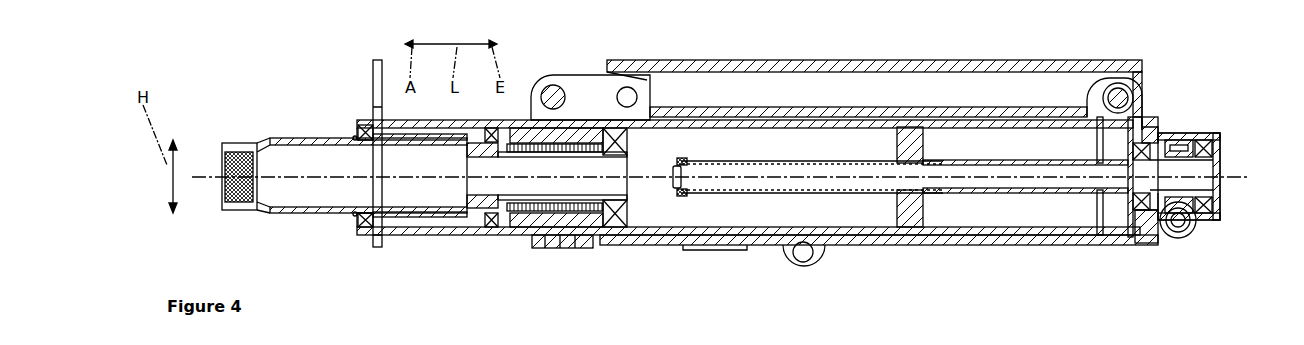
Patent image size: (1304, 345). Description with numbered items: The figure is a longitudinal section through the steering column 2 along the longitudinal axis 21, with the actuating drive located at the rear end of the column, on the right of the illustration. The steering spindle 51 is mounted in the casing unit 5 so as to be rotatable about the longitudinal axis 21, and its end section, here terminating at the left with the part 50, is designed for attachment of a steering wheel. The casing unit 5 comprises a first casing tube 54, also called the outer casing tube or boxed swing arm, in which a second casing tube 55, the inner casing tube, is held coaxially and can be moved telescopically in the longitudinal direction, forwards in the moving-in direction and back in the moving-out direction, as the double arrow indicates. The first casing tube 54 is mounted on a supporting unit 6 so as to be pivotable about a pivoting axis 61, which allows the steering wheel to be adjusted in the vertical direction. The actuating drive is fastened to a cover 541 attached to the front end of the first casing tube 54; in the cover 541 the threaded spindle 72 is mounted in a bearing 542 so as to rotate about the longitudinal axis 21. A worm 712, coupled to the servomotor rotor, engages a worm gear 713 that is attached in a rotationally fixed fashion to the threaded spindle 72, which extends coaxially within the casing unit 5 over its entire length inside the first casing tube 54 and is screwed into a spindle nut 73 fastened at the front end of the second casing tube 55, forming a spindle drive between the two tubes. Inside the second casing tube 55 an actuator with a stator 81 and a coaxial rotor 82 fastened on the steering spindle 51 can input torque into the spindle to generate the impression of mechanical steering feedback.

The steering column 2 is at (730, 154).
The casing unit 5 is at (977, 245).
The supporting unit 6 is at (810, 67).
The longitudinal axis 21 is at (198, 175).
The fitting 50 is at (238, 210).
The steering spindle 51 is at (310, 215).
The first casing tube 54 is at (1136, 172).
The second casing tube 55 is at (447, 235).
The pivoting axis 61 is at (1131, 117).
The threaded spindle 72 is at (1062, 185).
The spindle nut 73 is at (898, 227).
The stator 81 is at (525, 227).
The rotor 82 is at (590, 248).
The cover 541 is at (1145, 232).
The bearing 542 is at (1152, 150).
The worm 712 is at (1192, 236).
The worm gear 713 is at (1220, 203).